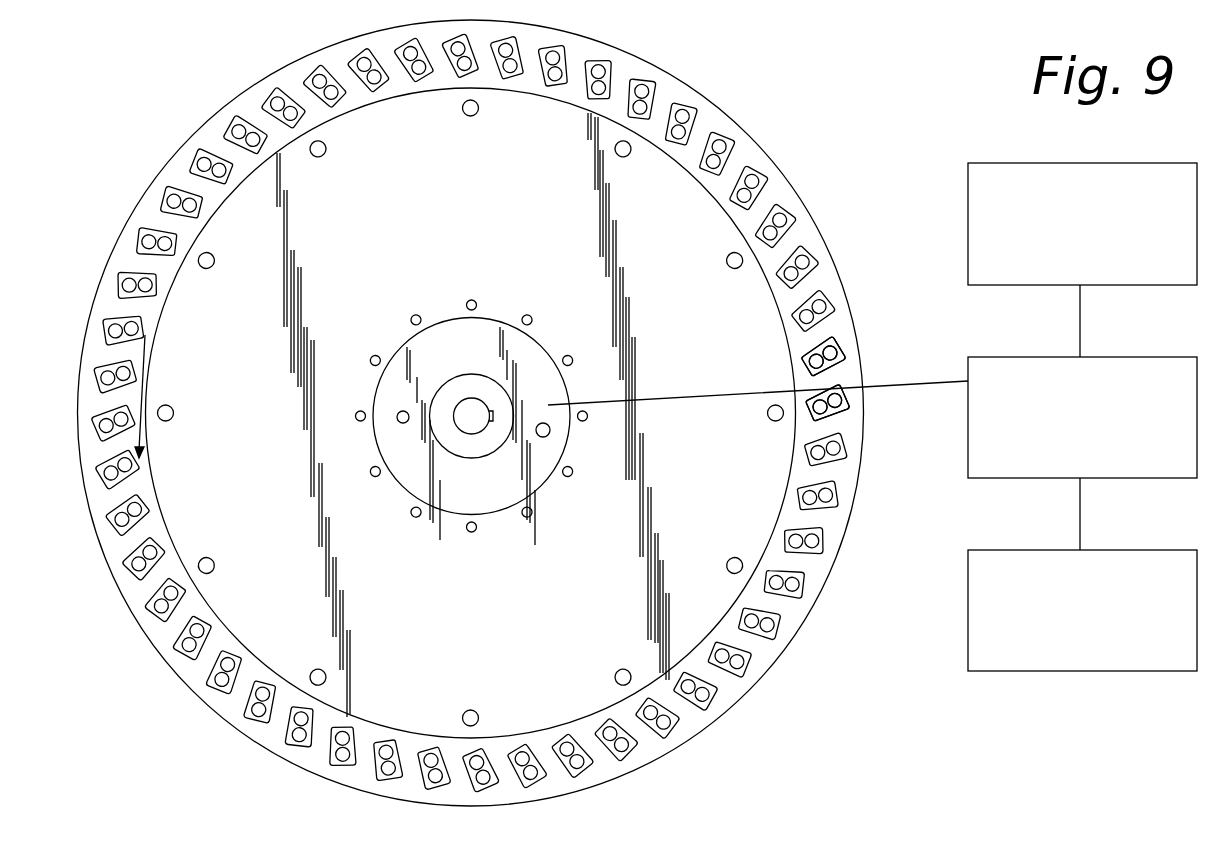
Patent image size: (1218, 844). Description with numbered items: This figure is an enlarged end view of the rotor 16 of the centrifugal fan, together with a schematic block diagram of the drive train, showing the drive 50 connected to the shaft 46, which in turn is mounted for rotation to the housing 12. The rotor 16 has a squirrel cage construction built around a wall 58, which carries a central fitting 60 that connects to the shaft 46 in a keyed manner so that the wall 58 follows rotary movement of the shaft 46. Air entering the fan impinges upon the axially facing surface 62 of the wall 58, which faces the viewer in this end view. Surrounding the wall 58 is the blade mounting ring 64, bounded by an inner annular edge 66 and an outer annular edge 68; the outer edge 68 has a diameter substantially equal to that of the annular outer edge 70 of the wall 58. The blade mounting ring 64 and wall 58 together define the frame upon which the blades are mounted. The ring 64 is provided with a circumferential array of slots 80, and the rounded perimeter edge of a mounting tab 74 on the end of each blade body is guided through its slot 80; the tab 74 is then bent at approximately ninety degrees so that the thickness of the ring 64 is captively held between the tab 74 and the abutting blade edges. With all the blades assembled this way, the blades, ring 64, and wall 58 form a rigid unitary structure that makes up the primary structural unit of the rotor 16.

The housing 12 is at (1173, 658).
The rotor 16 is at (792, 185).
The shaft 46 is at (1173, 465).
The drive 50 is at (1173, 272).
The wall 58 is at (608, 580).
The fitting 60 is at (495, 390).
The axially facing surface 62 is at (662, 483).
The blade mounting ring 64 is at (513, 787).
The inner annular edge 66 is at (680, 167).
The outer annular edge 68 is at (735, 122).
The annular outer edge 70 is at (782, 663).
The mounting tab 74 is at (835, 408).
The slot 80 is at (828, 383).